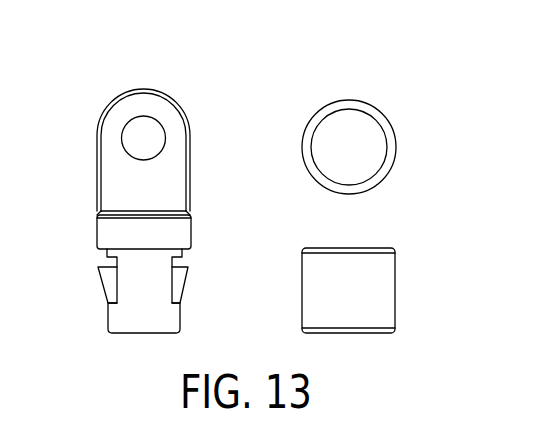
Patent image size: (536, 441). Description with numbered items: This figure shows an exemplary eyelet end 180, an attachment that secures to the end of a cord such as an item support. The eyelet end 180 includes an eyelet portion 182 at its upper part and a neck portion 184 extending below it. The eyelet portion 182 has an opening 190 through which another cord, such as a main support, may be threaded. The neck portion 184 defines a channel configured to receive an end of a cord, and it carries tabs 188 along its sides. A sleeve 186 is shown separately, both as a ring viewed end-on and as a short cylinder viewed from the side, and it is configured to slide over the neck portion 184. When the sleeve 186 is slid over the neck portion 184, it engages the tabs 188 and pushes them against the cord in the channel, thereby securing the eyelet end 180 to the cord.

The eyelet end 180 is at (248, 49).
The eyelet portion 182 is at (190, 178).
The neck portion 184 is at (168, 315).
The sleeve 186 is at (375, 107).
The tabs 188 is at (102, 280).
The opening 190 is at (135, 138).